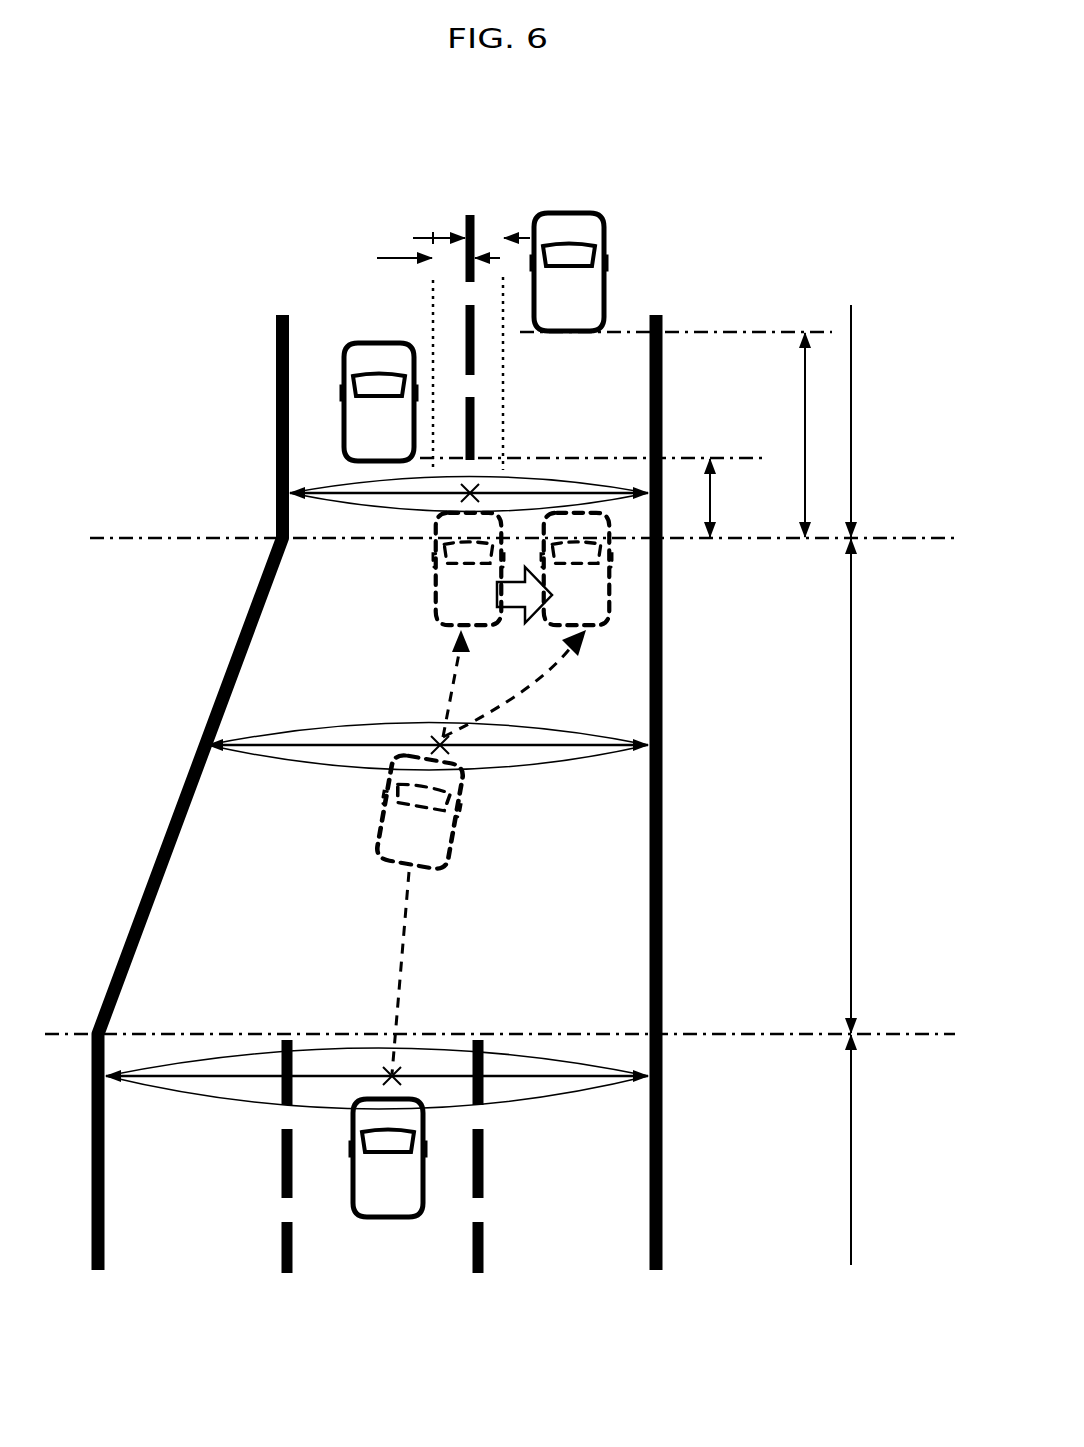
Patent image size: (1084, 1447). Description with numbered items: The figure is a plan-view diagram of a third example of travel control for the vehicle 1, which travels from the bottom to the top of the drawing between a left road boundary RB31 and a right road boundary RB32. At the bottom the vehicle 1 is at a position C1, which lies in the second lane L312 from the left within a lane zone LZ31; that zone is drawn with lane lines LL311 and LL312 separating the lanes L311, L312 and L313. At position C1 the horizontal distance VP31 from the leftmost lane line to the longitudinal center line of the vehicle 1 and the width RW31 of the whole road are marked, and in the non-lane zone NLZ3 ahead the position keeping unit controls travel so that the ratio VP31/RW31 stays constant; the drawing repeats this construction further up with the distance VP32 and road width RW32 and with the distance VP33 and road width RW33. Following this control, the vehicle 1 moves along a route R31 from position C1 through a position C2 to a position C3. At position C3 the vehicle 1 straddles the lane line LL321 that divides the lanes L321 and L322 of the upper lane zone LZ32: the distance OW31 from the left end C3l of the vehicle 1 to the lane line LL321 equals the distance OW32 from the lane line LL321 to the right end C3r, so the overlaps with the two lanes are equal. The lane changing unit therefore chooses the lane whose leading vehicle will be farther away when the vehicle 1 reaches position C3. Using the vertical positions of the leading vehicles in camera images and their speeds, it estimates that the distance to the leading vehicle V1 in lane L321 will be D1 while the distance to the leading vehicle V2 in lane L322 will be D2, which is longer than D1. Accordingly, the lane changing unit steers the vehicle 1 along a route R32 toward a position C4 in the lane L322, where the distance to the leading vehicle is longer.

The left road boundary RB31 is at (100, 1272).
The right road boundary RB32 is at (656, 1272).
The lane line LL321 is at (470, 212).
The lane line LL311 is at (288, 1275).
The lane line LL312 is at (478, 1275).
The lane L321 is at (305, 288).
The lane L322 is at (642, 300).
The lane L311 is at (165, 1240).
The second lane L312 is at (378, 1240).
The lane L313 is at (565, 1240).
The left end of the vehicle C3l is at (430, 326).
The right end of the vehicle C3r is at (505, 377).
The distance OW31 is at (428, 262).
The distance OW32 is at (503, 232).
The leading vehicle V1 is at (340, 410).
The leading vehicle V2 is at (606, 221).
The position C1 is at (426, 1172).
The vehicle 1 is at (347, 1168).
The position C2 is at (455, 853).
The position C3 is at (432, 606).
The position C4 is at (586, 632).
The route R31 is at (396, 936).
The route R32 is at (483, 712).
The virtual passing point VP33 is at (469, 483).
The road width RW33 is at (469, 507).
The virtual passing point VP32 is at (428, 726).
The road width RW32 is at (489, 761).
The horizontal distance VP31 is at (377, 1043).
The width of the whole road RW31 is at (377, 1088).
The non-lane zone NLZ3 is at (873, 785).
The lane zone LZ32 is at (870, 435).
The lane zone LZ31 is at (870, 1149).
The distance D2 is at (822, 435).
The distance D1 is at (729, 498).